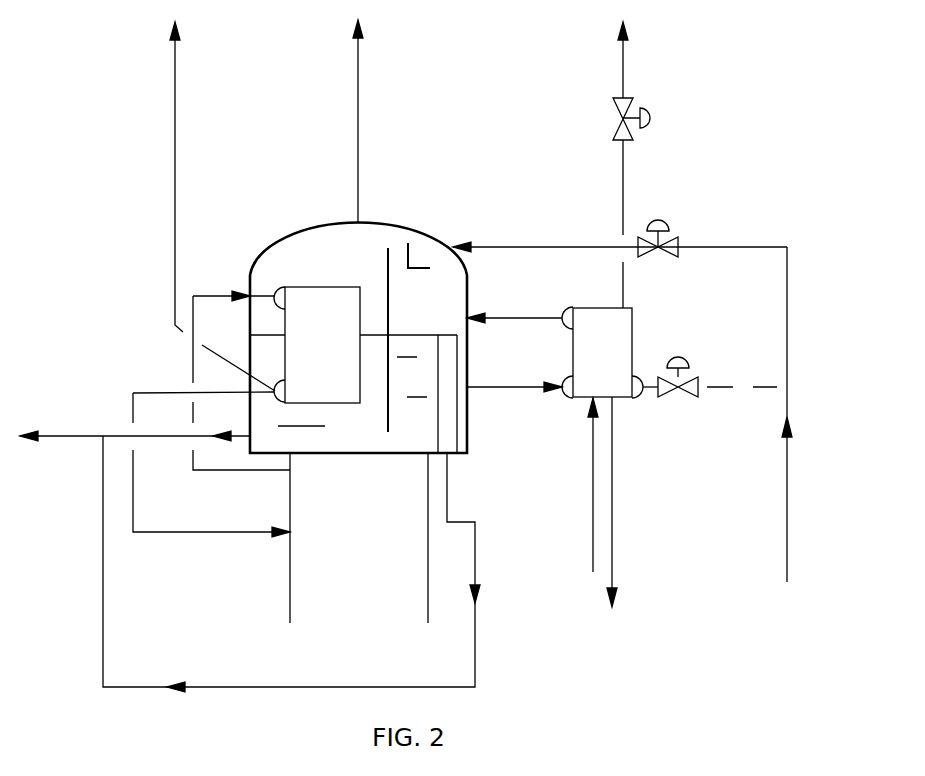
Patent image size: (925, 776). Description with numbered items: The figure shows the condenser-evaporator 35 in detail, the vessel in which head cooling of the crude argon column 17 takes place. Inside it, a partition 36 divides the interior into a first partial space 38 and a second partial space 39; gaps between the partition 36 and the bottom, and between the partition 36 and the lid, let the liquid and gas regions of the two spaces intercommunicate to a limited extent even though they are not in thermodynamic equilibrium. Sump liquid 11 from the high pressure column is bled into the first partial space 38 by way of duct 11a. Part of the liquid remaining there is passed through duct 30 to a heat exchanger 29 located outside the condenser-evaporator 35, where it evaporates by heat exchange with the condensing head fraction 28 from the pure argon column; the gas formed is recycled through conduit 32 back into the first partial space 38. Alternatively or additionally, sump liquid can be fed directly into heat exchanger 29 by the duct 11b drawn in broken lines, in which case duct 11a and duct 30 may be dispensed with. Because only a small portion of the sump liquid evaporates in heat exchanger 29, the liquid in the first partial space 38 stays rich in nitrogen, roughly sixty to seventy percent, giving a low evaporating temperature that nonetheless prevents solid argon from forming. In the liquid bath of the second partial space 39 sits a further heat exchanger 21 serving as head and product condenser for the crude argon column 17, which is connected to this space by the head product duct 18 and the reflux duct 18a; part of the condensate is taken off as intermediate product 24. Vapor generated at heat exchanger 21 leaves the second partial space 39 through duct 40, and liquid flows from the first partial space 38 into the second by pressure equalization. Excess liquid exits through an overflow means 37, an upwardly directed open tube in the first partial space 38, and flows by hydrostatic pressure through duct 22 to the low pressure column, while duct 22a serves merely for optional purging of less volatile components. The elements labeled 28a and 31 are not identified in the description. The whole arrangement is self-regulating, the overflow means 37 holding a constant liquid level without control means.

The sump liquid duct 11 is at (787, 495).
The duct 11a is at (788, 345).
The duct 11b is at (700, 388).
The crude argon column 17 is at (359, 538).
The head product duct 18 is at (193, 367).
The reflux duct 18a is at (195, 533).
The heat exchanger 21 is at (292, 287).
The duct 22 is at (475, 560).
The duct 22a is at (165, 438).
The intermediate product 24 is at (174, 205).
The head fraction 28 is at (593, 540).
The line 28a is at (612, 478).
The heat exchanger 29 is at (635, 359).
The duct 30 is at (480, 388).
The vent line 31 is at (623, 190).
The conduit 32 is at (533, 318).
The condenser-evaporator 35 is at (388, 210).
The partition 36 is at (388, 432).
The overflow means 37 is at (452, 417).
The first partial space 38 is at (408, 314).
The second partial space 39 is at (339, 257).
The duct 40 is at (358, 118).